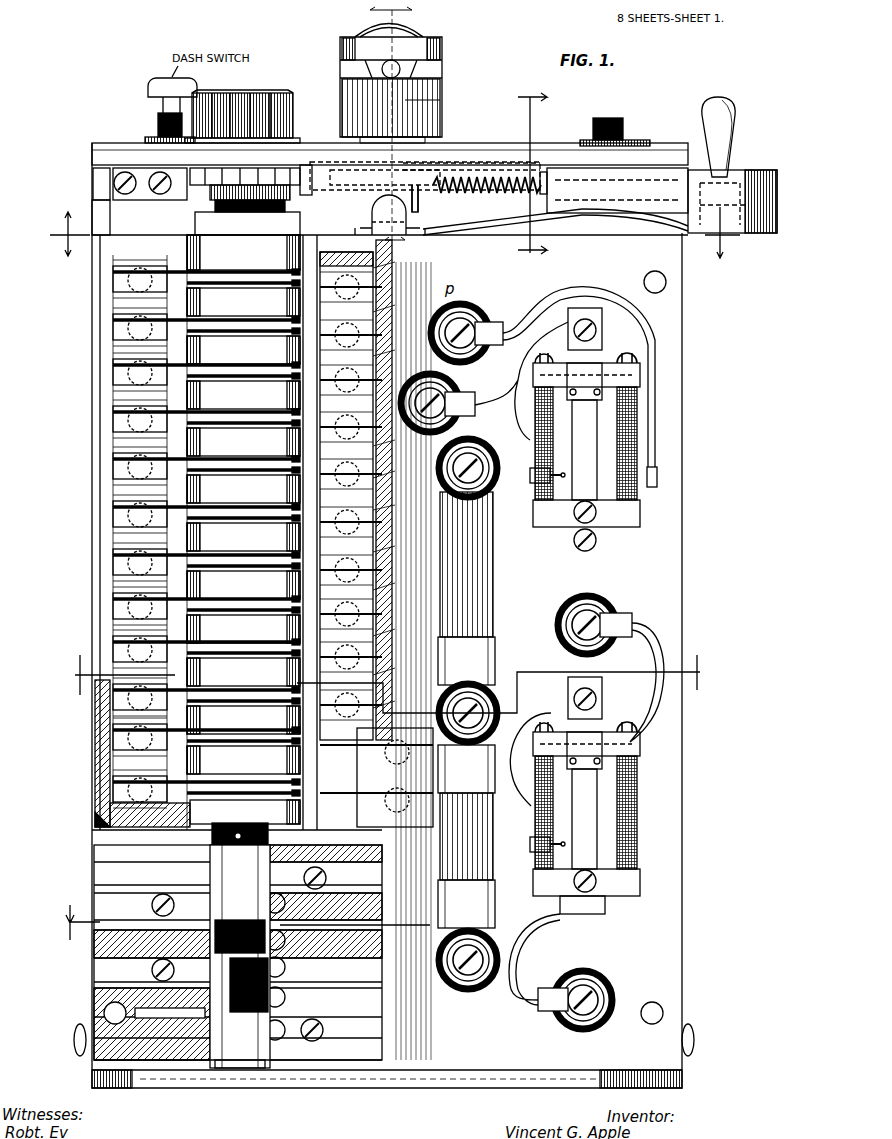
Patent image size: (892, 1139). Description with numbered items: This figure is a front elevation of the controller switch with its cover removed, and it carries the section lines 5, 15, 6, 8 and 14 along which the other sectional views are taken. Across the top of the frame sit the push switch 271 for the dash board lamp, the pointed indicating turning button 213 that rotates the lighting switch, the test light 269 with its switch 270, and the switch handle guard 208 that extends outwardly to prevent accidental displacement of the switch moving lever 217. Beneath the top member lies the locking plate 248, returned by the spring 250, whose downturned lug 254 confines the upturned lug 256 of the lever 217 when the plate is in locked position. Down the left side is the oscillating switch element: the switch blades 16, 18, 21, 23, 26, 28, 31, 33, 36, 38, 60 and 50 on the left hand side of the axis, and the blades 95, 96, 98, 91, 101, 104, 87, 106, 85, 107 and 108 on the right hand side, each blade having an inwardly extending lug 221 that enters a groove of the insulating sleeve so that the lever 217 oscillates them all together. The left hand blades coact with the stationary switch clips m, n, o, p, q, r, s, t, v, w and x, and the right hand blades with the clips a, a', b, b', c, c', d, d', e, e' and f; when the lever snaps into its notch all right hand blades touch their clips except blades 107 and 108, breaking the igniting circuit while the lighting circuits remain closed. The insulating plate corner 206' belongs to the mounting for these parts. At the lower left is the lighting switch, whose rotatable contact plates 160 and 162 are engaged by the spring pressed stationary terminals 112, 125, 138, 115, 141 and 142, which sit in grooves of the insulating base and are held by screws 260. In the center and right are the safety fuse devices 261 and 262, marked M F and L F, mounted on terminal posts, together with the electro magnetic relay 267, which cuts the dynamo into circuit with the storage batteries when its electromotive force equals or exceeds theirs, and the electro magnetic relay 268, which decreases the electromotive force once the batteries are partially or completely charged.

The switch 271 is at (158, 118).
The indicating turning button 213 is at (262, 100).
The test light 269 is at (430, 45).
The locking plate 248 is at (450, 171).
The spring 250 is at (530, 178).
The downturned lug 254 is at (420, 206).
The upturned lug 256 is at (400, 224).
The section line 14— 14 is at (489, 242).
The switch moving lever 217 is at (566, 232).
The switch 270 is at (615, 118).
The switch handle guard 208 is at (740, 172).
The section line 5— 5 is at (392, 232).
The section line 15— 15 is at (532, 174).
The section line 6— 6 is at (387, 684).
The section line 8— 8 is at (240, 922).
The switch blade 16 is at (243, 252).
The switch blade 18 is at (243, 302).
The switch blade 95 is at (243, 302).
The switch blade 21 is at (243, 350).
The switch blade 96 is at (243, 350).
The switch blade 23 is at (243, 395).
The switch blade 98 is at (243, 395).
The switch blade 26 is at (243, 442).
The switch blade 91 is at (243, 442).
The switch blade 28 is at (243, 489).
The switch blade 101 is at (243, 489).
The switch blade 31 is at (243, 627).
The switch blade 85 is at (243, 627).
The switch blade 33 is at (243, 585).
The switch blade 104 is at (243, 585).
The switch blade 36 is at (243, 629).
The switch blade 87 is at (243, 629).
The switch blade 38 is at (243, 672).
The switch blade 106 is at (243, 672).
The switch blade 60 is at (243, 720).
The switch blade 50 is at (243, 761).
The switch blade 107 is at (243, 760).
The long switch blade 108 is at (245, 812).
The base plate corner 206' is at (65, 827).
The inwardly extending lug 221 is at (207, 840).
The contact plate 160 is at (200, 878).
The screws 260 is at (153, 897).
The switch terminal 112 is at (150, 910).
The switch terminal 138 is at (150, 973).
The switch terminal 125 is at (297, 881).
The contact plate 115 is at (319, 940).
The contact plate 162 is at (250, 1070).
The switch terminal 142 is at (314, 1003).
The switch terminal 141 is at (296, 1043).
The safety fuse device 261 is at (491, 560).
The safety fuse device 262 is at (481, 820).
The electro magnetic relay 267 is at (637, 433).
The electro magnetic relay 268 is at (616, 814).
The stationary switch clip x is at (113, 279).
The stationary switch clip w is at (113, 327).
The stationary switch clip v is at (113, 372).
The stationary switch clip t is at (113, 466).
The stationary switch clip s is at (113, 514).
The stationary switch clip r is at (113, 562).
The stationary switch clip q is at (113, 606).
The stationary switch clip p is at (113, 649).
The stationary switch clip o is at (113, 697).
The stationary switch clip n is at (113, 737).
The stationary switch clip m is at (113, 789).
The stationary switch clip a is at (392, 268).
The stationary switch clip a' is at (392, 311).
The stationary switch clip b is at (391, 353).
The stationary switch clip b' is at (392, 443).
The stationary switch clip c is at (391, 473).
The stationary switch clip c' is at (391, 506).
The stationary switch clip d is at (391, 547).
The stationary switch clip d' is at (392, 583).
The stationary switch clip e is at (391, 629).
The stationary switch clip e' is at (392, 668).
The stationary switch clip f is at (390, 701).